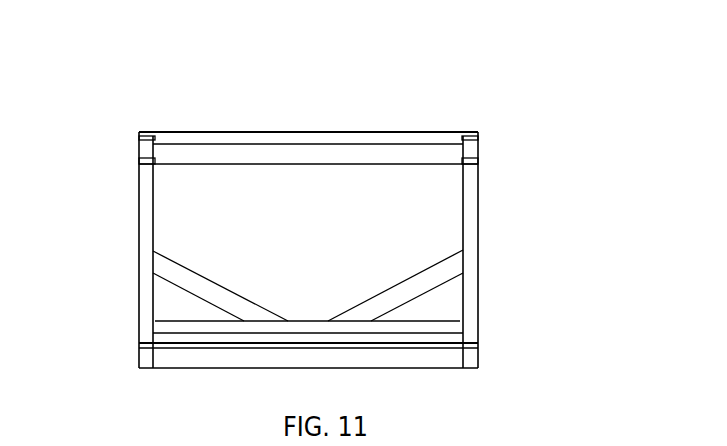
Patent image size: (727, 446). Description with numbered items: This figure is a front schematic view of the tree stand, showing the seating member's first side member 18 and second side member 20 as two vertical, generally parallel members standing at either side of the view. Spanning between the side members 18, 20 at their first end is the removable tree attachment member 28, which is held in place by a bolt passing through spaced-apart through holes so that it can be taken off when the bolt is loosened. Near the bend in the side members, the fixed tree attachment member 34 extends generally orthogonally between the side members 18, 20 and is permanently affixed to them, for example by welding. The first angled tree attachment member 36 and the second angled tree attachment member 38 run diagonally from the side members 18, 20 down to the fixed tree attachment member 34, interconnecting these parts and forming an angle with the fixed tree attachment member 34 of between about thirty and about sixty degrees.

The first side member 18 is at (468, 297).
The second side member 20 is at (151, 253).
The removable tree attachment member 28 is at (270, 153).
The fixed tree attachment member 34 is at (222, 328).
The first angled tree attachment member 36 is at (227, 296).
The second angled tree attachment member 38 is at (388, 294).